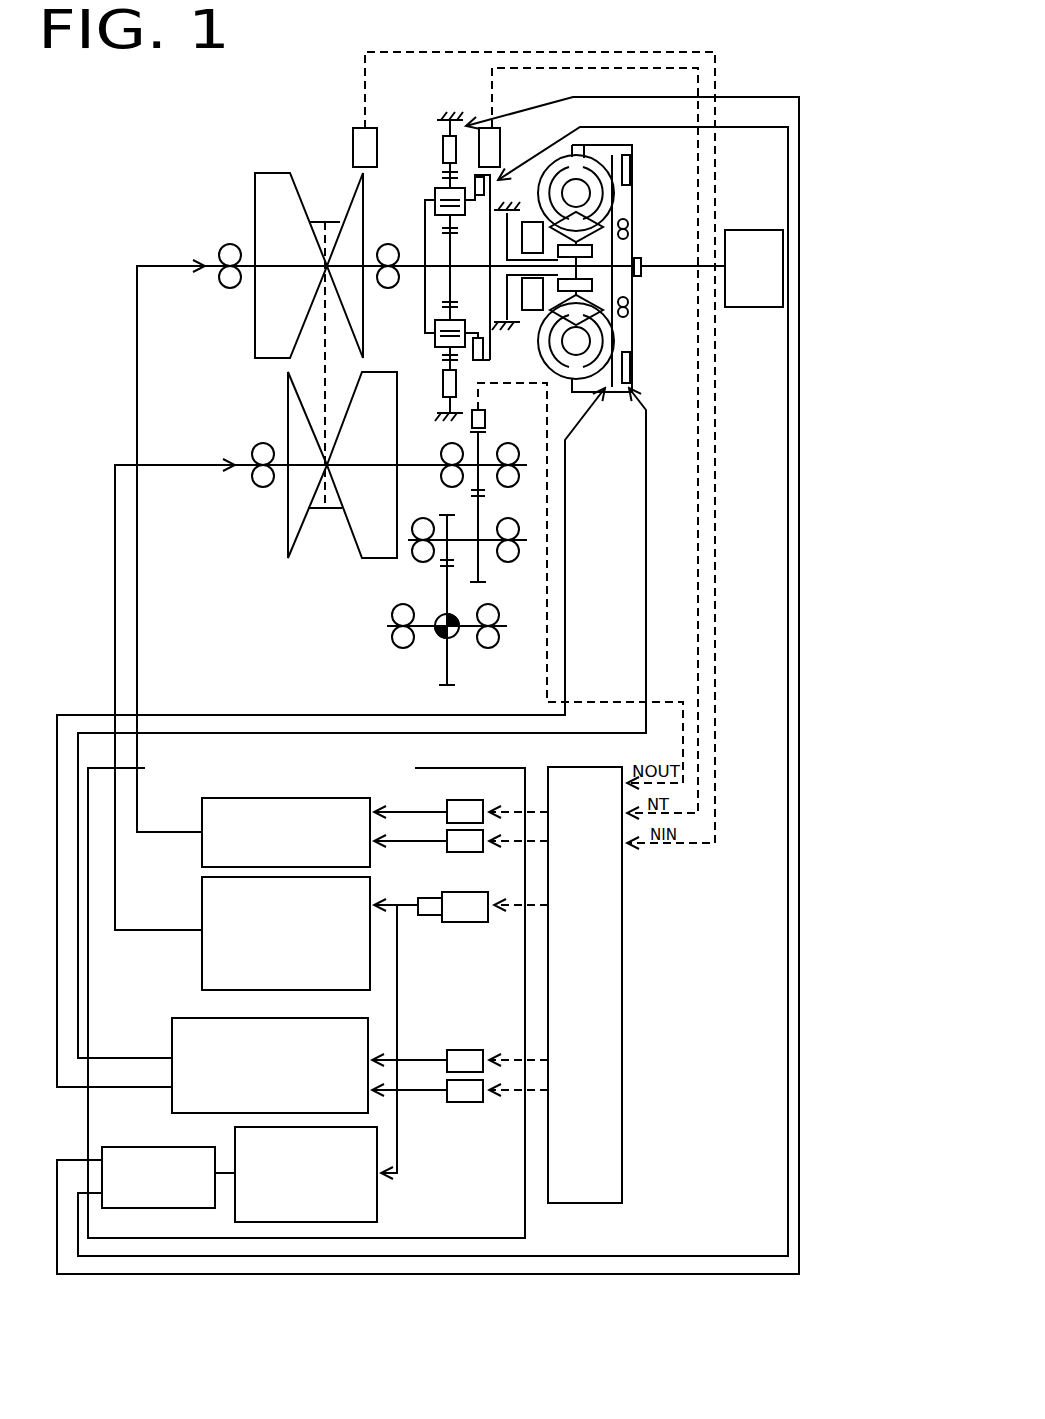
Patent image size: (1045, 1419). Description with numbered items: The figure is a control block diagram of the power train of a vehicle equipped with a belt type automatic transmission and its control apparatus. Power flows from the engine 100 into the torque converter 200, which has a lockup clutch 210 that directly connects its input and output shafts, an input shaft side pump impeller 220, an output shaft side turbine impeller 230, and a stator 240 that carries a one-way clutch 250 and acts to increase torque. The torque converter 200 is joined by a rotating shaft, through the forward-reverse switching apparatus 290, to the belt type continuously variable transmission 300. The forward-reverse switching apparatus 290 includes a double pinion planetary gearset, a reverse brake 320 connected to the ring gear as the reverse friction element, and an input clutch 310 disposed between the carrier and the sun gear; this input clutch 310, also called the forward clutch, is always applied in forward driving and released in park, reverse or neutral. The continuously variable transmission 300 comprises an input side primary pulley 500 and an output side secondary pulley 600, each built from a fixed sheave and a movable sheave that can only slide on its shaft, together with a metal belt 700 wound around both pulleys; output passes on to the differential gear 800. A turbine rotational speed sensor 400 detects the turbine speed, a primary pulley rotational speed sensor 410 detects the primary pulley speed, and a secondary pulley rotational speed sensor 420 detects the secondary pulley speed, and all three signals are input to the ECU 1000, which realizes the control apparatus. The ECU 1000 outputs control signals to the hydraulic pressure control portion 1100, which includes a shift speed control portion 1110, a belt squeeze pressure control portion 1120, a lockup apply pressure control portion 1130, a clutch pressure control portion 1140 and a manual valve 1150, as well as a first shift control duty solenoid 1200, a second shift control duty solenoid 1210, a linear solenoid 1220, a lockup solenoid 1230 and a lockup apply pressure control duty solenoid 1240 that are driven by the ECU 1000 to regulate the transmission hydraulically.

The engine 100 is at (768, 214).
The torque converter 200 is at (608, 251).
The lockup clutch 210 is at (632, 297).
The pump impeller 220 is at (553, 182).
The turbine impeller 230 is at (595, 172).
The stator 240 is at (585, 222).
The one-way clutch 250 is at (603, 259).
The forward-reverse switching apparatus 290 is at (377, 238).
The belt type continuously variable transmission 300 is at (317, 410).
The input clutch 310 is at (474, 178).
The reverse brake 320 is at (437, 150).
The turbine rotational speed sensor 400 is at (497, 127).
The primary pulley rotational speed sensor 410 is at (353, 146).
The secondary pulley rotational speed sensor 420 is at (513, 421).
The primary pulley 500 is at (267, 317).
The secondary pulley 600 is at (302, 517).
The metal belt 700 is at (296, 364).
The differential gear 800 is at (458, 641).
The ECU 1000 is at (622, 1043).
The hydraulic pressure control portion 1100 is at (437, 768).
The shift speed control portion 1110 is at (202, 843).
The belt squeeze pressure control portion 1120 is at (202, 960).
The lockup apply pressure control portion 1130 is at (172, 1033).
The clutch pressure control portion 1140 is at (377, 1200).
The manual valve 1150 is at (157, 1147).
The shift control duty solenoid (1) 1200 is at (450, 852).
The shift control duty solenoid (2) 1210 is at (462, 784).
The linear solenoid 1220 is at (457, 922).
The lockup solenoid 1230 is at (490, 1020).
The lockup apply pressure control duty solenoid 1240 is at (458, 1102).